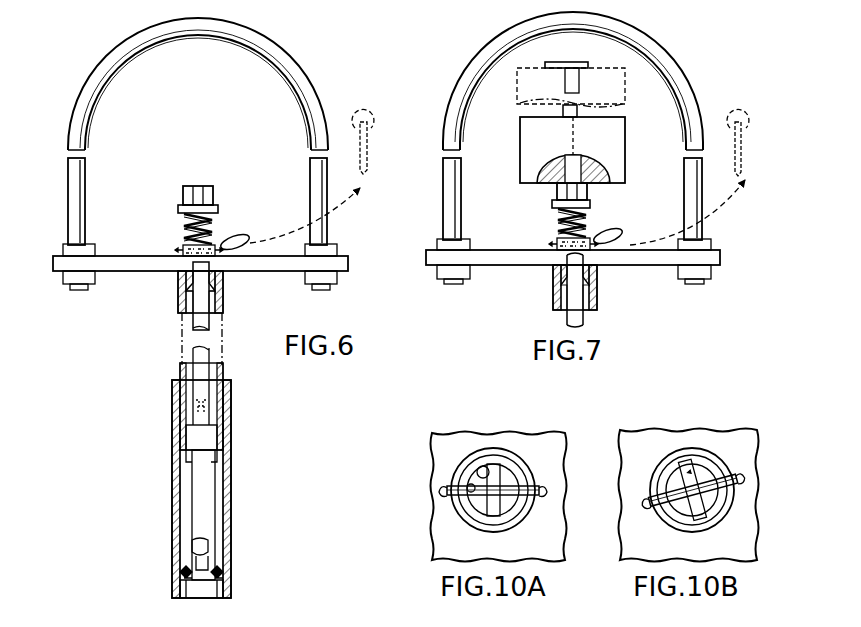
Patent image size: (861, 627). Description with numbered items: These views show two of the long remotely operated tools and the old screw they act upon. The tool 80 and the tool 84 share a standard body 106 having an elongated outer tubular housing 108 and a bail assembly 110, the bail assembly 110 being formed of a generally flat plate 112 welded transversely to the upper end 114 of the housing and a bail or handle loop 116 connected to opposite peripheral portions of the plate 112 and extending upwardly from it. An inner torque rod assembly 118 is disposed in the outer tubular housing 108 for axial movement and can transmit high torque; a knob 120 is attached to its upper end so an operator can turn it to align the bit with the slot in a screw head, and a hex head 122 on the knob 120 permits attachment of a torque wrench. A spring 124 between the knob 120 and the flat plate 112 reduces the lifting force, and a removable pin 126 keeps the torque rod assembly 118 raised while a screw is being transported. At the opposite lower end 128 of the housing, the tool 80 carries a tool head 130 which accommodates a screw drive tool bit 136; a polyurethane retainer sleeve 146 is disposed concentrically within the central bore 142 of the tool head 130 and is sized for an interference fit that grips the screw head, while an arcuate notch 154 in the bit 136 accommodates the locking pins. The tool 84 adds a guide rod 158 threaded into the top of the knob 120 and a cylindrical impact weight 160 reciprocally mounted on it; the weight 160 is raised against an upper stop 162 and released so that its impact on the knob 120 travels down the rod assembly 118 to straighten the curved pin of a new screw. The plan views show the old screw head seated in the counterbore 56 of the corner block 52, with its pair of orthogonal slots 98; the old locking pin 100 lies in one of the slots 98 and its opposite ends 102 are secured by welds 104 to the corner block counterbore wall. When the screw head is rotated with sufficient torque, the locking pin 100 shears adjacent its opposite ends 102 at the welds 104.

In FIG. 6, the tool 80 is at (74, 362).
In FIG. 7, the tool 84 is at (656, 284).
In FIG. 6, the bail assembly 110 is at (283, 54).
In FIG. 7, the bail assembly 110 is at (676, 54).
In FIG. 6, the bail or handle loop 116 is at (304, 88).
In FIG. 7, the bail or handle loop 116 is at (688, 92).
In FIG. 6, the flat plate 112 is at (125, 259).
In FIG. 7, the flat plate 112 is at (510, 250).
In FIG. 6, the hex head 122 is at (210, 193).
In FIG. 7, the hex head 122 is at (553, 191).
In FIG. 6, the knob 120 is at (214, 205).
In FIG. 7, the knob 120 is at (544, 204).
In FIG. 6, the spring 124 is at (184, 242).
In FIG. 7, the spring 124 is at (586, 224).
In FIG. 6, the removable pin 126 is at (240, 239).
In FIG. 7, the removable pin 126 is at (618, 234).
In FIG. 6, the standard body 106 is at (176, 302).
In FIG. 7, the standard body 106 is at (536, 293).
In FIG. 6, the upper end 114 is at (222, 270).
In FIG. 7, the upper end 114 is at (556, 276).
In FIG. 6, the outer tubular housing 108 is at (222, 290).
In FIG. 7, the outer tubular housing 108 is at (592, 296).
In FIG. 6, the inner torque rod assembly 118 is at (202, 380).
In FIG. 6, the lower end 128 is at (182, 416).
In FIG. 6, the tool head 130 is at (224, 464).
In FIG. 6, the central bore 142 is at (194, 492).
In FIG. 6, the screw drive tool bit 136 is at (190, 544).
In FIG. 6, the arcuate notch 154 is at (218, 576).
In FIG. 6, the retainer sleeve 146 is at (178, 580).
In FIG. 7, the upper stop 162 is at (558, 64).
In FIG. 7, the guide rod 158 is at (578, 110).
In FIG. 7, the cylindrical impact weight 160 is at (520, 139).
In FIG. 10A, the orthogonal slots 98 is at (472, 452).
In FIG. 10B, the orthogonal slots 98 is at (698, 520).
In FIG. 10A, the locking pin 100 is at (506, 468).
In FIG. 10B, the locking pin 100 is at (674, 484).
In FIG. 10A, the opposite ends 102 is at (448, 504).
In FIG. 10B, the opposite ends 102 is at (692, 482).
In FIG. 10A, the welds 104 is at (440, 488).
In FIG. 10B, the welds 104 is at (642, 488).
In FIG. 10A, the counterbore 56 is at (464, 514).
In FIG. 10B, the counterbore 56 is at (672, 528).
In FIG. 10A, the corner block 52 is at (542, 555).
In FIG. 10B, the corner block 52 is at (644, 527).